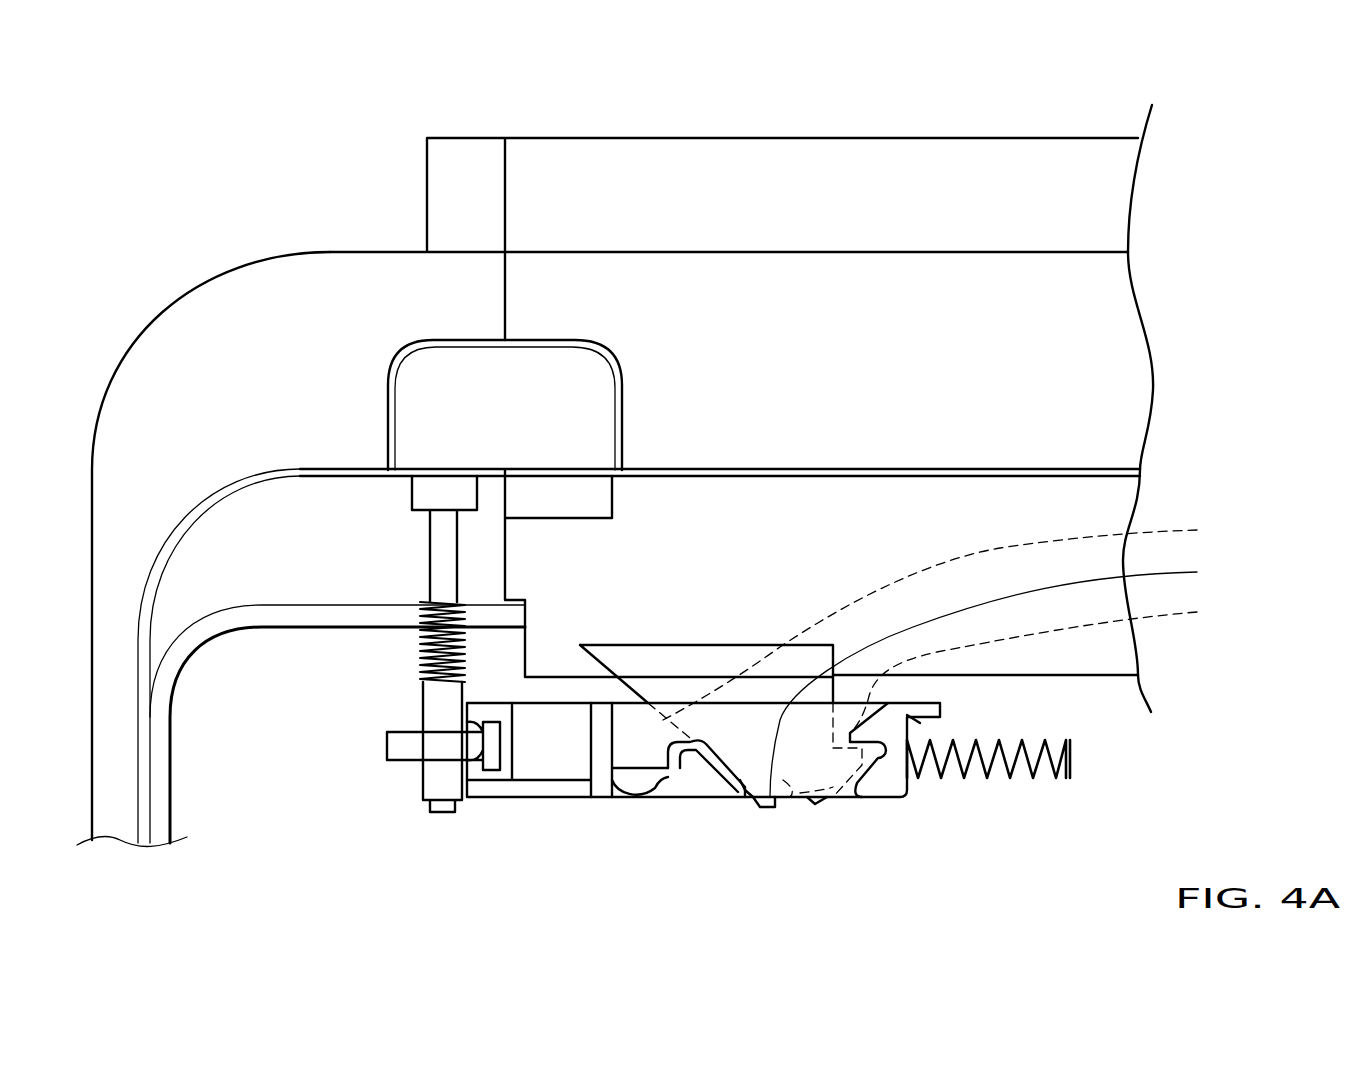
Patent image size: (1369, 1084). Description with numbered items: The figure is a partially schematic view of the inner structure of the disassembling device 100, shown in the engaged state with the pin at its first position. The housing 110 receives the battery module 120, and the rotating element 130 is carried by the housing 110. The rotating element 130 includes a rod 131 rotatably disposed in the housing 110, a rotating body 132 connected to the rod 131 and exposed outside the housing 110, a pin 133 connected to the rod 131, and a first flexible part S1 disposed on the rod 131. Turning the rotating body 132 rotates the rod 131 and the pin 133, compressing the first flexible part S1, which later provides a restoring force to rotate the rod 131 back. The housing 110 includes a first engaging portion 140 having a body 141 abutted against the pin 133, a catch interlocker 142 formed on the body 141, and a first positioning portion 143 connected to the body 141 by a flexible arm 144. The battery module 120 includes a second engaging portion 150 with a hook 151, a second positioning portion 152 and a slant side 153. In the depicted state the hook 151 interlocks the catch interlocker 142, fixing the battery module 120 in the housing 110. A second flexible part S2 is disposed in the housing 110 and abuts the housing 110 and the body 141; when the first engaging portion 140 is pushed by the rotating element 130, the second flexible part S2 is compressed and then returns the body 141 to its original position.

The disassembling device 100 is at (118, 136).
The housing 110 is at (160, 347).
The battery module 120 is at (1110, 198).
The rotating element 130 is at (248, 660).
The rod 131 is at (413, 442).
The rotating body 132 is at (440, 572).
The pin 133 is at (397, 743).
The first engaging portion 140 is at (890, 868).
The body 141 is at (833, 800).
The catch interlocker 142 is at (880, 755).
The first positioning portion 143 is at (702, 780).
The flexible arm 144 is at (653, 790).
The second engaging portion 150 is at (1255, 510).
The hook 151 is at (1055, 663).
The second positioning portion 152 is at (1013, 677).
The slant side 153 is at (960, 618).
The first flexible part S1 is at (440, 683).
The second flexible part S2 is at (1040, 780).